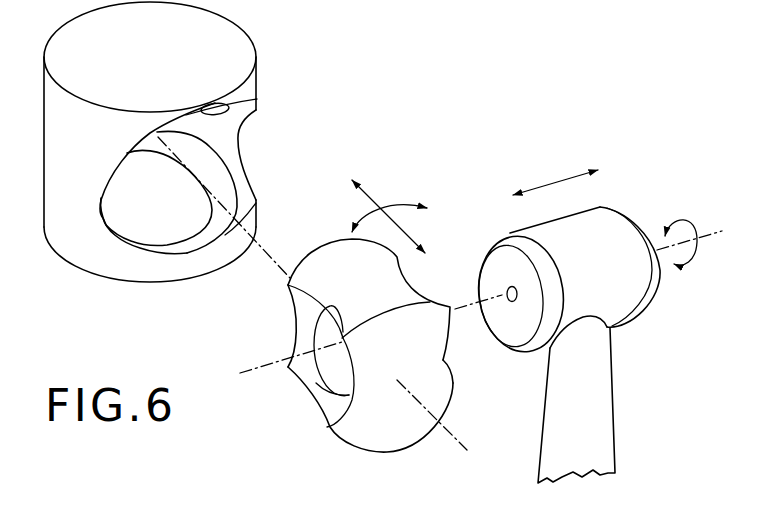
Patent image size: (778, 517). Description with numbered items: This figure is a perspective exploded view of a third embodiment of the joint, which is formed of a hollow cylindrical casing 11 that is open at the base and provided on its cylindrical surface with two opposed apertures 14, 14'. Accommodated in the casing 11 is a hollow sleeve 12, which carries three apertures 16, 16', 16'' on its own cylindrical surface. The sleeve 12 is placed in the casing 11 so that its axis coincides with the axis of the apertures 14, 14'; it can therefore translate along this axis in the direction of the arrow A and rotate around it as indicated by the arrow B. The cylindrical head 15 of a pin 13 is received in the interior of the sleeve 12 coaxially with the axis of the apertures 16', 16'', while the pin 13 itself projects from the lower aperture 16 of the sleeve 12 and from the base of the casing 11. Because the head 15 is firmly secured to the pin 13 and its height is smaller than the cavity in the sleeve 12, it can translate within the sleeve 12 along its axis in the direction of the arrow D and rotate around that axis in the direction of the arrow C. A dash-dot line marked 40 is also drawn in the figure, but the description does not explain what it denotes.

The cylindrical first member 11 is at (72, 177).
The rotary disc member 12 is at (398, 425).
The tape 13 is at (597, 410).
The transverse groove 14 is at (269, 155).
The groove edge 14' is at (250, 82).
The roller 15 is at (632, 290).
The groove surface 16 is at (321, 380).
The groove end 16' is at (475, 389).
The groove end 16'' is at (285, 357).
The axis 40 is at (332, 327).
The direction of movement A is at (380, 201).
The direction of rotation B is at (400, 213).
The direction of rotation C is at (692, 245).
The direction of movement D is at (555, 173).